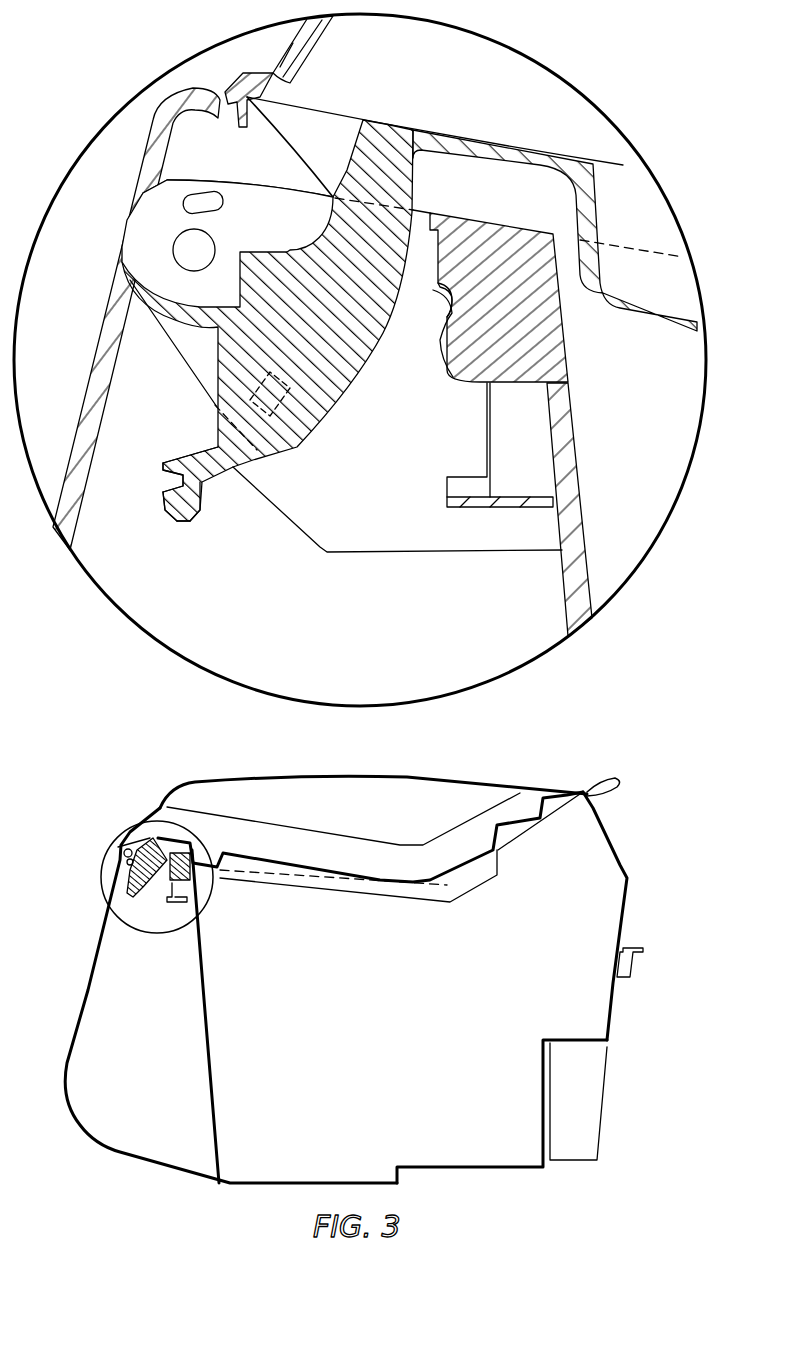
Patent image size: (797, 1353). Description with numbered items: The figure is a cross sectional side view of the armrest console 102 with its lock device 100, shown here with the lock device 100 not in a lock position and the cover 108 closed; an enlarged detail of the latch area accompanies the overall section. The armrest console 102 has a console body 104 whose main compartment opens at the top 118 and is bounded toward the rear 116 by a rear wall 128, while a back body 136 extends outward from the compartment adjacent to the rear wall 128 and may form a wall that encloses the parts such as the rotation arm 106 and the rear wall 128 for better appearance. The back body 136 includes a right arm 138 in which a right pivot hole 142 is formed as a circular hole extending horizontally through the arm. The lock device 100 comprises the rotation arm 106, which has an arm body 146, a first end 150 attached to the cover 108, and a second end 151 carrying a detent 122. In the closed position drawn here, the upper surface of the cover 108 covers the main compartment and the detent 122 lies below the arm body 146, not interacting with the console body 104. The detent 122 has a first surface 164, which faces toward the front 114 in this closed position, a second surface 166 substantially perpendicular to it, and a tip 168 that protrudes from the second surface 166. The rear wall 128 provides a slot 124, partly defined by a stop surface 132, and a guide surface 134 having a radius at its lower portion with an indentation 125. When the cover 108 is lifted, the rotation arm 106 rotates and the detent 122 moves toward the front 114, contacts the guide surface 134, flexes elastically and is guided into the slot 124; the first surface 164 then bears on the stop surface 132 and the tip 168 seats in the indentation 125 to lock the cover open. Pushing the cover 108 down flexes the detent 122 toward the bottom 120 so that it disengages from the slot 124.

The lock device 100 is at (97, 44).
The armrest console 102 is at (640, 854).
The console body 104 is at (532, 912).
The rotation arm 106 is at (325, 425).
The cover 108 is at (268, 764).
The front 114 is at (613, 1010).
The rear 116 is at (72, 1027).
The top 118 is at (513, 833).
The bottom 120 is at (475, 1167).
The detent 122 is at (176, 482).
The slot 124 is at (457, 293).
The indentation 125 is at (523, 357).
The rear wall 128 is at (553, 385).
The stop surface 132 is at (433, 285).
The guide surface 134 is at (437, 353).
The back body 136 is at (110, 968).
The right arm 138 is at (343, 513).
The right pivot hole 142 is at (208, 243).
The arm body 146 is at (240, 355).
The first end 150 is at (418, 142).
The second end 151 is at (237, 470).
The first surface 164 is at (207, 497).
The second surface 166 is at (185, 513).
The tip 168 is at (170, 517).